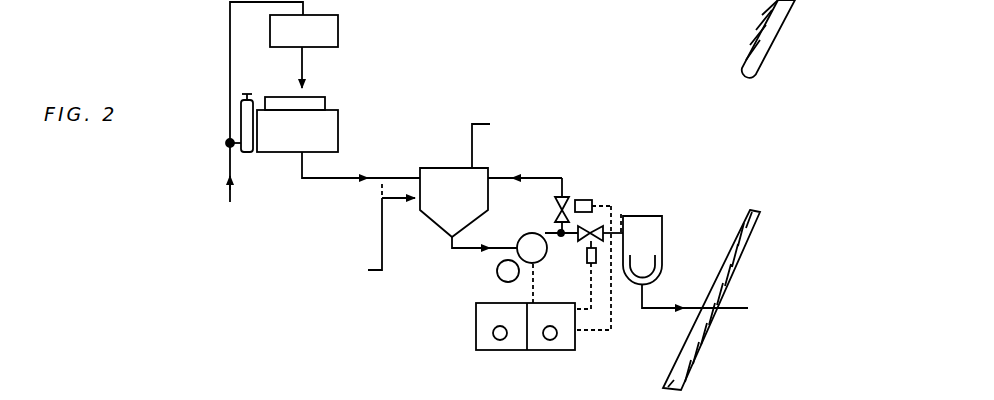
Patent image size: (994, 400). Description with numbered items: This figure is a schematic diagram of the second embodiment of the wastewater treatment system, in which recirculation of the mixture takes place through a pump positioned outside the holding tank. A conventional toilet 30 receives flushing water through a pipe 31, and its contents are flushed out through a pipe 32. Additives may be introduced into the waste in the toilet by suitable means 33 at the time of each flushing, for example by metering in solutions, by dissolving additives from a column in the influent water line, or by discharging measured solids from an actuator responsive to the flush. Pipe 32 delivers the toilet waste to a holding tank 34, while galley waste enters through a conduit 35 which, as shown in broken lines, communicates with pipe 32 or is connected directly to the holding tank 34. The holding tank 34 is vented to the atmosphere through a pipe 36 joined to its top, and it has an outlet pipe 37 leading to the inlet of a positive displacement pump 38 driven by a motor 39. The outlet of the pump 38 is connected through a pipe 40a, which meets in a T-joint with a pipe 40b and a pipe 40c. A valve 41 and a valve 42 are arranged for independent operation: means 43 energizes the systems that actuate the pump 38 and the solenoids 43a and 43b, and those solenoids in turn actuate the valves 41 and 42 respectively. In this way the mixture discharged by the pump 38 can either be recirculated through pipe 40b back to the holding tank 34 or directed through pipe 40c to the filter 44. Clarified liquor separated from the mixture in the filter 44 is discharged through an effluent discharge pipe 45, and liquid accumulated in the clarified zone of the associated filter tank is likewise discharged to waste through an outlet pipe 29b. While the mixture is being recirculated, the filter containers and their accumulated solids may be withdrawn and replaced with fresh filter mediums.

The outlet pipe 29b is at (728, 0).
The toilet 30 is at (264, 104).
The pipe 31 is at (228, 163).
The pipe 32 is at (306, 181).
The additive means 33 is at (305, 62).
The holding tank 34 is at (512, 155).
The conduit 35 is at (392, 275).
The vent pipe 36 is at (471, 145).
The outlet pipe 37 is at (459, 250).
The positive displacement pump 38 is at (542, 261).
The motor 39 is at (497, 278).
The pipe 40a is at (573, 275).
The pipe 40b is at (562, 186).
The pipe 40c is at (621, 214).
The valve 41 is at (555, 210).
The valve 42 is at (597, 226).
The energizing means 43 is at (551, 351).
The solenoid 43a is at (590, 200).
The solenoid 43b is at (598, 290).
The filter 44 is at (662, 226).
The effluent discharge pipe 45 is at (739, 312).